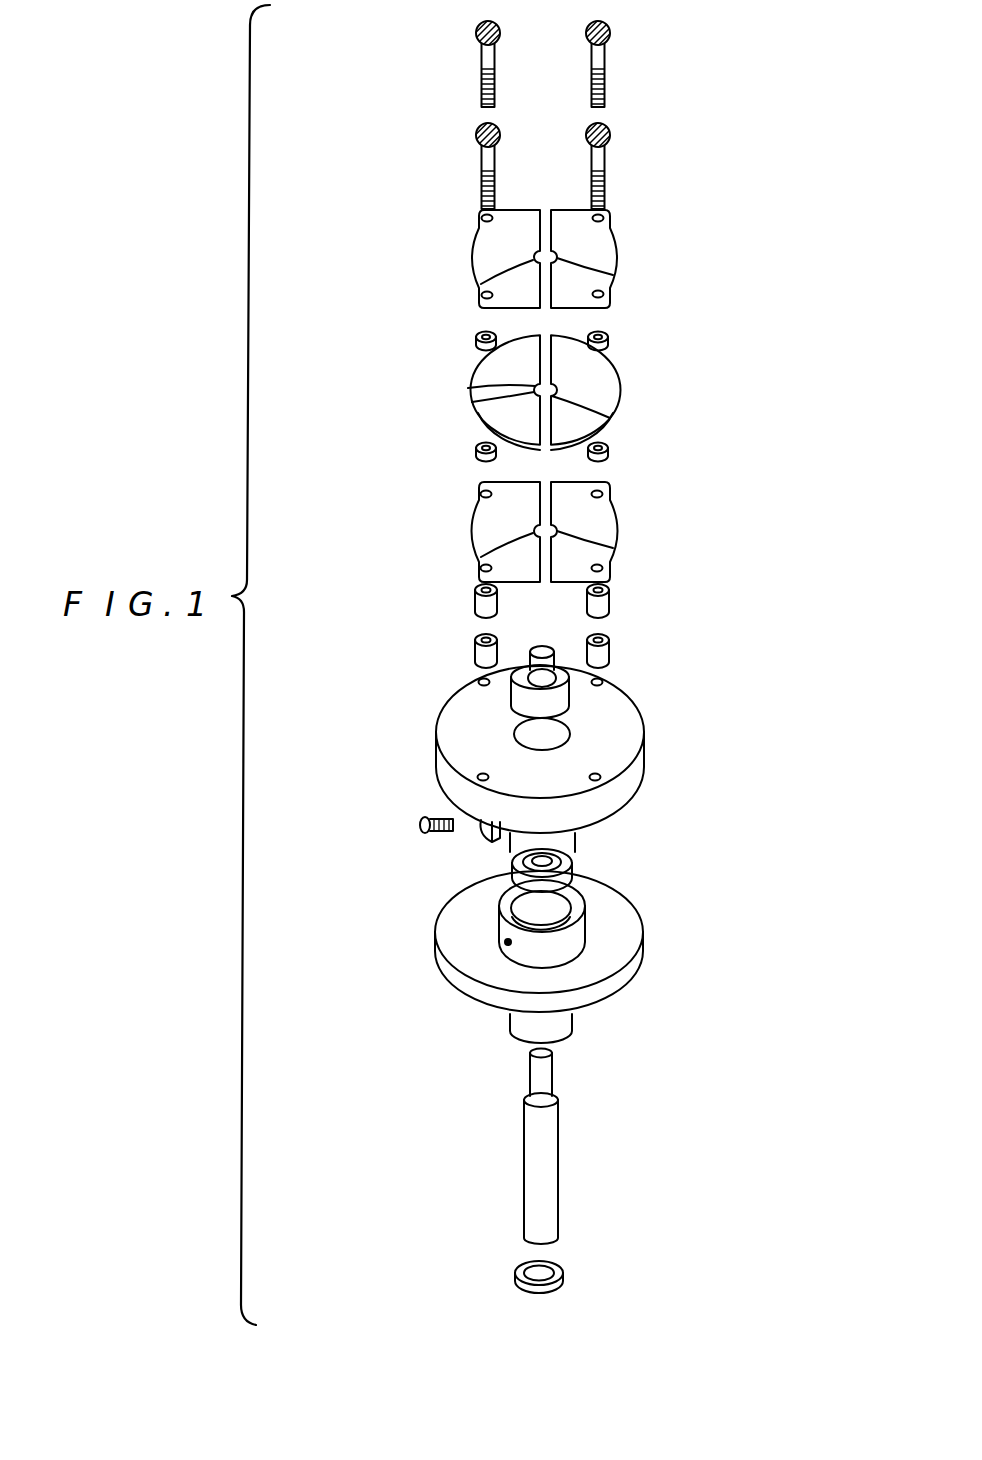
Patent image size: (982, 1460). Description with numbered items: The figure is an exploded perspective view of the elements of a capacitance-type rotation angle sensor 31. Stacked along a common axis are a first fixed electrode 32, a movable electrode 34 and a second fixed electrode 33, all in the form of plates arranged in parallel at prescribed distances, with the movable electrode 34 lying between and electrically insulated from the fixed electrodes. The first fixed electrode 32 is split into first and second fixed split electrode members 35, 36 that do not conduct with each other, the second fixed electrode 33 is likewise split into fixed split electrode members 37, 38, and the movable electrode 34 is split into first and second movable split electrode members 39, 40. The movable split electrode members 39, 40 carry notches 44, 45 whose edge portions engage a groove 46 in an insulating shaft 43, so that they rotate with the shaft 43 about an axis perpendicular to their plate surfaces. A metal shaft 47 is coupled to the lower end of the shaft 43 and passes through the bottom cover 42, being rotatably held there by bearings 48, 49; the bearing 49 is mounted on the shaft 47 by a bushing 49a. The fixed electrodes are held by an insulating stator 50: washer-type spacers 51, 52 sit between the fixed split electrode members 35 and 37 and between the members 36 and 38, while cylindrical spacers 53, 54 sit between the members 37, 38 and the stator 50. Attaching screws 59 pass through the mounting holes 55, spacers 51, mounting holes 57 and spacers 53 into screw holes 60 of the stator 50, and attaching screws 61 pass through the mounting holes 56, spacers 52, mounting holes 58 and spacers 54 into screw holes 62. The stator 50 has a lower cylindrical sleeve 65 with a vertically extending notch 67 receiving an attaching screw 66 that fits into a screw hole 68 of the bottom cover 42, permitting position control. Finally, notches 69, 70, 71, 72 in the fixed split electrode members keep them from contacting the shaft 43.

The capacitance-type rotation angle sensor 31 is at (772, 98).
The first fixed electrode 32 is at (567, 245).
The second fixed electrode 33 is at (574, 552).
The movable electrode 34 is at (580, 393).
The first fixed split electrode member 35 is at (470, 252).
The second fixed split electrode member 36 is at (618, 252).
The first fixed split electrode member 37 is at (468, 538).
The second fixed split electrode member 38 is at (616, 540).
The first movable split electrode member 39 is at (468, 388).
The second movable split electrode member 40 is at (618, 386).
The bottom cover 42 is at (548, 957).
The shaft 43 is at (553, 771).
The notch 44 is at (472, 402).
The notch 45 is at (610, 418).
The groove 46 is at (532, 693).
The shaft 47 is at (562, 1161).
The bearing 48 is at (500, 874).
The bearing 49 is at (575, 1025).
The bushing 49a is at (566, 1266).
The stator 50 is at (640, 768).
The washer-type spacer 51 is at (478, 340).
The washer-type spacer 52 is at (607, 335).
The cylindrical spacer 53 is at (474, 646).
The cylindrical spacer 54 is at (609, 650).
The mounting hole 55 is at (483, 216).
The mounting hole 56 is at (605, 214).
The mounting hole 57 is at (480, 492).
The mounting hole 58 is at (603, 494).
The attaching screw 59 is at (482, 172).
The screw hole 60 is at (480, 682).
The attaching screw 61 is at (607, 158).
The screw hole 62 is at (601, 680).
The cylindrical sleeve 65 is at (583, 858).
The attaching screw 66 is at (418, 825).
The notch 67 is at (500, 845).
The screw hole 68 is at (506, 945).
The notch 69 is at (481, 296).
The notch 70 is at (627, 283).
The notch 71 is at (481, 569).
The notch 72 is at (554, 531).